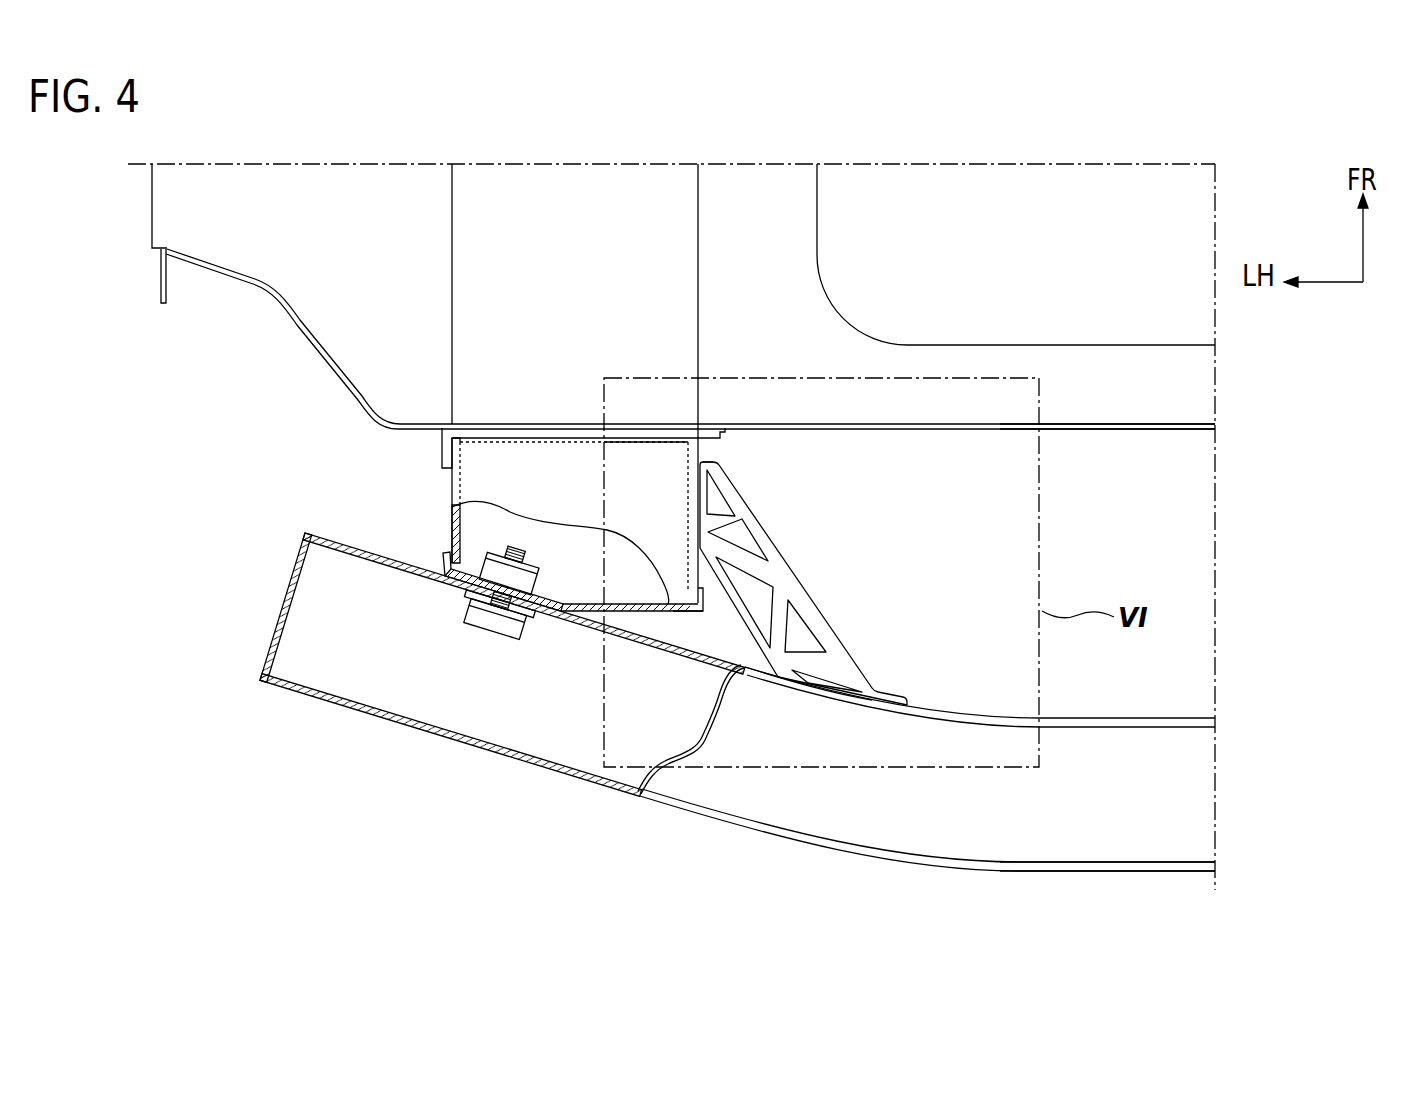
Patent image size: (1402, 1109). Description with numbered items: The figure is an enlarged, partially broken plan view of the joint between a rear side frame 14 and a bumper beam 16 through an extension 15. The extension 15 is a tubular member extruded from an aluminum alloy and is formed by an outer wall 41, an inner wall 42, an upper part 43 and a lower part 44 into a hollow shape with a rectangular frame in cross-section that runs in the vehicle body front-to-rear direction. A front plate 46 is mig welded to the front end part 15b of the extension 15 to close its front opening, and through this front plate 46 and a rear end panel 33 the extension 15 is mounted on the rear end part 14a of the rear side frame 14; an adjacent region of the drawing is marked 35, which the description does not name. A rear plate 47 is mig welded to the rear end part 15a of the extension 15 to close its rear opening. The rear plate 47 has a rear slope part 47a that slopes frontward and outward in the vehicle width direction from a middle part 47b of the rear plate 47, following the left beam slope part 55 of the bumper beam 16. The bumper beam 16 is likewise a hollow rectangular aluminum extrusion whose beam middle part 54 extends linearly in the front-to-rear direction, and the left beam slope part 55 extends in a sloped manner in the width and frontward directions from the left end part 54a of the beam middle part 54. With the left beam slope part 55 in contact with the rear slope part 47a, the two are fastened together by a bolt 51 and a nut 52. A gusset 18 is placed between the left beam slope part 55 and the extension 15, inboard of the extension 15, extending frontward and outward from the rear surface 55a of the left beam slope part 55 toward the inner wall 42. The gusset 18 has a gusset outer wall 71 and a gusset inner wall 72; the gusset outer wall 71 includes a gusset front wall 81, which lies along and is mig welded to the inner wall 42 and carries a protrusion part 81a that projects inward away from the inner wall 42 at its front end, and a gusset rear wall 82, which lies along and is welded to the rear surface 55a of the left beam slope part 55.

The rear side frame 14 is at (698, 237).
The rear end part of rear side frame 14a is at (452, 337).
The extension 15 is at (595, 463).
The rear end part of extension 15a is at (682, 592).
The front end part of extension 15b is at (498, 447).
The bumper beam 16 is at (1110, 875).
The gusset 18 is at (768, 574).
The rear end panel 33 is at (1108, 430).
The side member region 35 is at (1042, 285).
The outer wall 41 is at (452, 520).
The inner wall 42 is at (733, 513).
The upper part 43 is at (632, 460).
The lower part 44 is at (620, 584).
The front plate 46 is at (560, 428).
The rear plate 47 is at (573, 693).
The rear slope part 47a is at (548, 606).
The middle part of rear plate 47b is at (572, 616).
The bolt 51 is at (487, 632).
The nut 52 is at (530, 585).
The beam middle part 54 is at (927, 808).
The left end part of beam middle part 54a is at (945, 872).
The left beam slope part 55 is at (603, 705).
The rear surface of left beam slope part 55a is at (772, 668).
The gusset outer wall 71 is at (740, 625).
The gusset inner wall 72 is at (812, 628).
The gusset front wall 81 is at (697, 495).
The protrusion part 81a is at (708, 458).
The gusset rear wall 82 is at (820, 688).